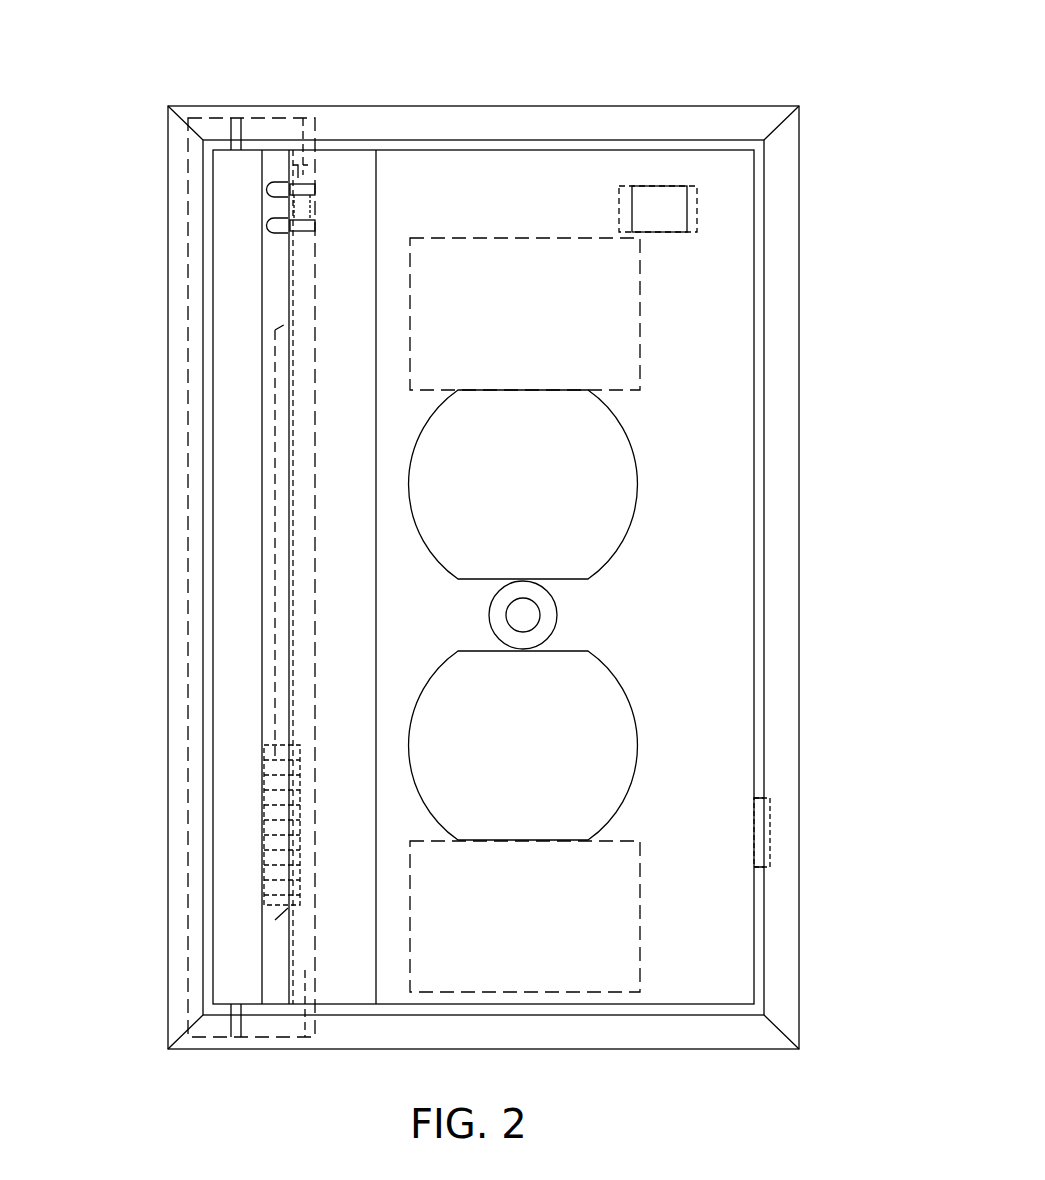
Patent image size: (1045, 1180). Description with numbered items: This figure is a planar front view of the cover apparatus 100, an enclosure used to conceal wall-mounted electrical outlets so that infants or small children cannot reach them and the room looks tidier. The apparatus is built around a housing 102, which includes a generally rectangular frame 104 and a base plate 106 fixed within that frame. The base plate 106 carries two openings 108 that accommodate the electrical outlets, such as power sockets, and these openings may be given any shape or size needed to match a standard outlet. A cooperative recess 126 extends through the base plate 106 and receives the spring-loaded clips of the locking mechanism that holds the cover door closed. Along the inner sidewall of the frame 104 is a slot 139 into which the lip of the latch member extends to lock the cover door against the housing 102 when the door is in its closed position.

The cover apparatus 100 is at (808, 62).
The housing 102 is at (164, 241).
The frame 104 is at (782, 305).
The base plate 106 is at (714, 382).
The openings 108 is at (583, 489).
The recess 126 is at (658, 207).
The slot 139 is at (770, 842).